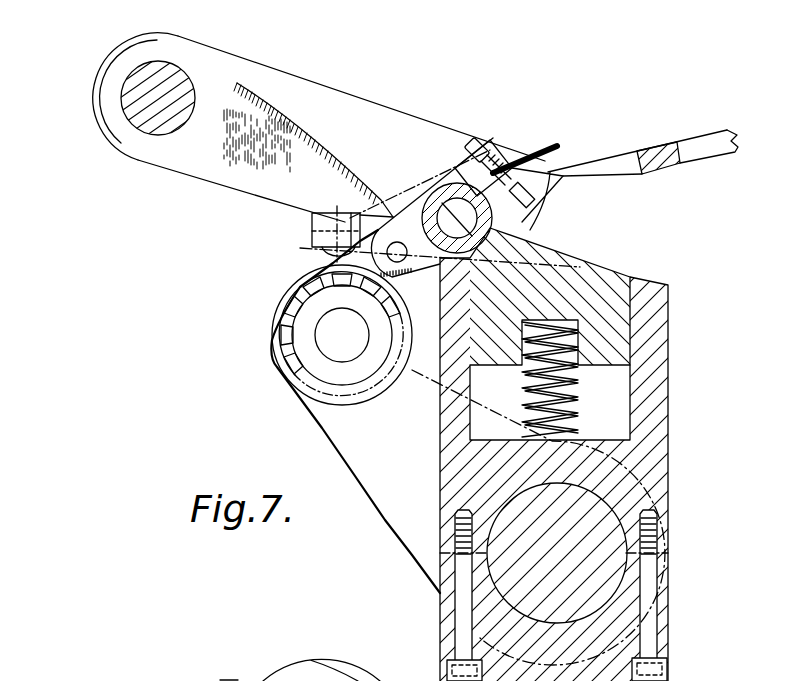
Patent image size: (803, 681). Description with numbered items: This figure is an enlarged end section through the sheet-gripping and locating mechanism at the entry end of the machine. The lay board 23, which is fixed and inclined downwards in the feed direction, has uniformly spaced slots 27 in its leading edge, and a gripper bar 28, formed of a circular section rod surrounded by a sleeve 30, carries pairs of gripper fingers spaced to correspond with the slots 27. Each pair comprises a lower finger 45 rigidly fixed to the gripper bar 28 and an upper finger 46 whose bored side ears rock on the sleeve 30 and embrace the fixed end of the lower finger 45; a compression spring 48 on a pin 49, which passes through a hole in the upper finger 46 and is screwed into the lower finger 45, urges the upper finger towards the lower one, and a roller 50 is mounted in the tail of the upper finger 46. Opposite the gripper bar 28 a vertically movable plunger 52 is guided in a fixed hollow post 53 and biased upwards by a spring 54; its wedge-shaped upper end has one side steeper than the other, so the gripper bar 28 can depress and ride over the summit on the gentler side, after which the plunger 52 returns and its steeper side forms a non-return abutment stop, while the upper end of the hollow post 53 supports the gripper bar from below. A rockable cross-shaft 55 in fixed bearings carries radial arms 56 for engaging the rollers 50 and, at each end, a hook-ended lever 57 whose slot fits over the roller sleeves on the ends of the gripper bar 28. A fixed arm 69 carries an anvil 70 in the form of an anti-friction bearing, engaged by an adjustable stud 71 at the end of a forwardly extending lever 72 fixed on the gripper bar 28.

The lay board 23 is at (702, 143).
The slots 27 is at (597, 162).
The gripper bar 28 is at (461, 205).
The sleeve 30 is at (423, 201).
The lower finger 45 is at (552, 180).
The upper finger 46 is at (549, 142).
The compression spring 48 is at (503, 156).
The pin 49 is at (486, 139).
The roller 50 is at (413, 274).
The plunger 52 is at (624, 328).
The hollow post 53 is at (662, 487).
The spring 54 is at (577, 400).
The cross-shaft 55 is at (171, 121).
The arm 56 is at (220, 174).
The hook-ended lever 57 is at (347, 101).
The fixed arm 69 is at (380, 512).
The anvil 70 is at (276, 333).
The adjustable stud 71 is at (323, 253).
The forwardly extending lever 72 is at (312, 237).